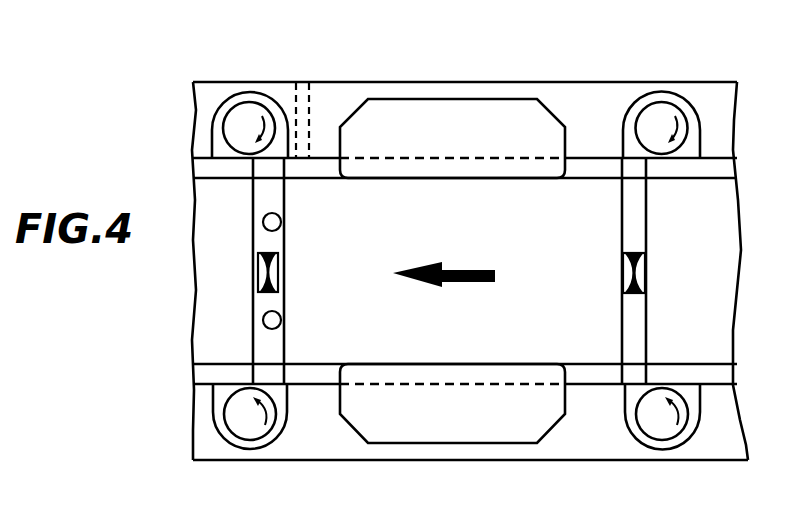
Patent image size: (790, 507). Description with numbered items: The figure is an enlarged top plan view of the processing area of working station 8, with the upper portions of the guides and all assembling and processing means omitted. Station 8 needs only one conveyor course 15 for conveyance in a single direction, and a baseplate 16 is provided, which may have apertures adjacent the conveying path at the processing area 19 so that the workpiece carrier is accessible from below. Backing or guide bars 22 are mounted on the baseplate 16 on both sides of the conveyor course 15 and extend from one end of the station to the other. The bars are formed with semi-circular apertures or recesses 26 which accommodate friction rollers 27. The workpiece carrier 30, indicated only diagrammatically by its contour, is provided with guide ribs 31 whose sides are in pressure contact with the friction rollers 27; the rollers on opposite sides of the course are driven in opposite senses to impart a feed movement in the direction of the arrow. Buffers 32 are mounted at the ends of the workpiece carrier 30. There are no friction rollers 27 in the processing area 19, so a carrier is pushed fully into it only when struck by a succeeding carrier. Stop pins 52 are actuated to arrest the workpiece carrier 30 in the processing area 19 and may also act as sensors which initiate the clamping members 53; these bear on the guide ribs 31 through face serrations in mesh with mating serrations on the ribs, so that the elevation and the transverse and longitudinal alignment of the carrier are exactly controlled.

The station 8 is at (576, 74).
The conveyor course 15 is at (176, 307).
The baseplate 16 is at (572, 443).
The processing area 19 is at (439, 90).
The guide bar 22 is at (605, 117).
The semi-circular recess 26 is at (247, 99).
The friction roller 27 is at (235, 125).
The workpiece carrier 30 is at (400, 220).
The guide rib 31 is at (320, 167).
The buffer 32 is at (258, 276).
The stop pin 52 is at (265, 325).
The clamping member 53 is at (482, 138).